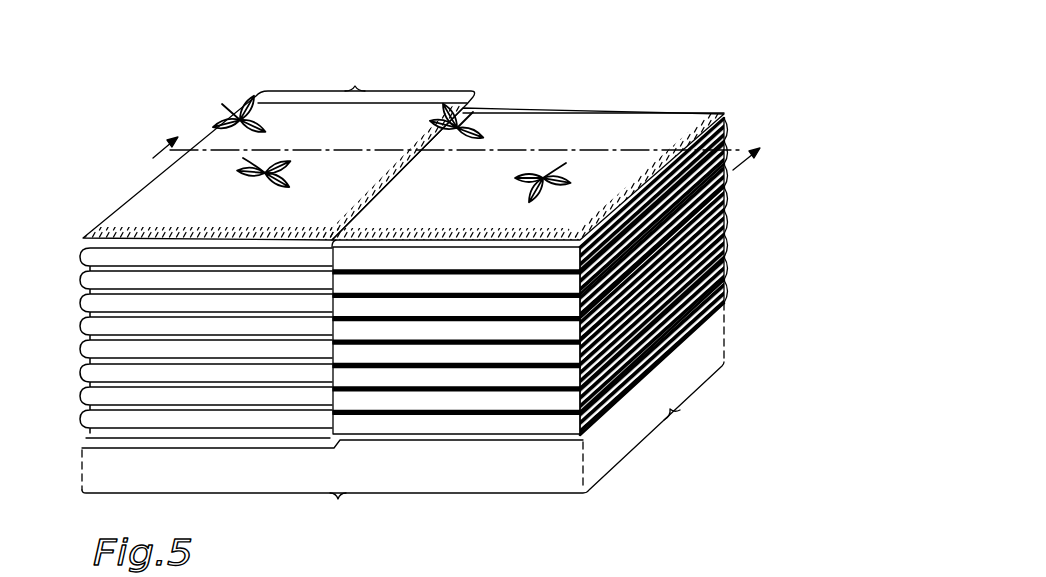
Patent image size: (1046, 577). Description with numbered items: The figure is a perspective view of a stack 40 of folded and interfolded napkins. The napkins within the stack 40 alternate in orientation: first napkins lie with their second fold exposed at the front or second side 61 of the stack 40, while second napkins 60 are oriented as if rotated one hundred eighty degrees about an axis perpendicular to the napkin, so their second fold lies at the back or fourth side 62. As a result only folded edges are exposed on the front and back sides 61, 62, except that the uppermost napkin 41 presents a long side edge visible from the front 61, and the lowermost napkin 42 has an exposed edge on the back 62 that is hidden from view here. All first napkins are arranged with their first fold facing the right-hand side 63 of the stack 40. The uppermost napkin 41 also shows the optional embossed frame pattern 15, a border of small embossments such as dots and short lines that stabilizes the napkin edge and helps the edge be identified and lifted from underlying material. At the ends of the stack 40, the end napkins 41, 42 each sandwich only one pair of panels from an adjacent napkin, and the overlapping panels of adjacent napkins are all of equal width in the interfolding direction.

The embossed frame pattern 15 is at (110, 227).
The stack 40 is at (704, 65).
The uppermost napkin 41 is at (600, 113).
The lowermost napkin 42 is at (403, 414).
The second napkins 60 is at (525, 113).
The front or second side of the stack 61 is at (72, 325).
The back or fourth side of the stack 62 is at (393, 74).
The right-hand side of the stack 63 is at (698, 246).